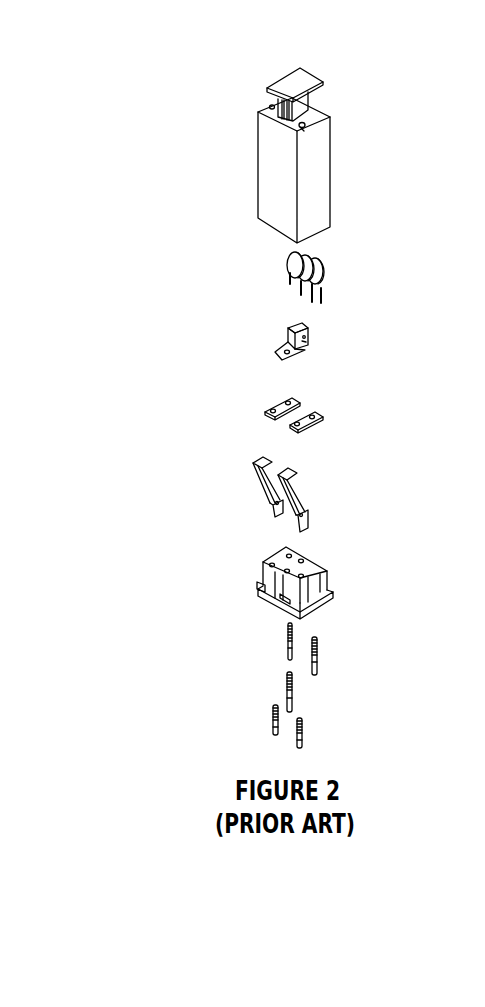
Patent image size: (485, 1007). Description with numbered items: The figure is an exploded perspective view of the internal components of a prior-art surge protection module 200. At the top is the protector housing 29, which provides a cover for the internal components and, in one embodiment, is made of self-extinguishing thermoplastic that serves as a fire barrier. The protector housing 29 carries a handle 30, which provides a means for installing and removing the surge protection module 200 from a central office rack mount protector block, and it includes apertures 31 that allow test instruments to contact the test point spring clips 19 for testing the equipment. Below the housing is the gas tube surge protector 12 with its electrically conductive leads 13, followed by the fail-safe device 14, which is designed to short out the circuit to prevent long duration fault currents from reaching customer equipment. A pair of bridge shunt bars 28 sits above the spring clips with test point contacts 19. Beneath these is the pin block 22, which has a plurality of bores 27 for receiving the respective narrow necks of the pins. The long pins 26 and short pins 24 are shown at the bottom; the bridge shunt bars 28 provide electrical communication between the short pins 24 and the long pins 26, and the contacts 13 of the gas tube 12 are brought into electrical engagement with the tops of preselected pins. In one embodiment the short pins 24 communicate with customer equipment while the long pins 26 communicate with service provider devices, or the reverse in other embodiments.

The surge protection module 200 is at (387, 84).
The handle 30 is at (295, 80).
The apertures 31 is at (268, 105).
The protector housing 29 is at (257, 162).
The gas tube surge protector 12 is at (306, 263).
The electrically conductive leads 13 is at (300, 290).
The fail-safe device 14 is at (304, 331).
The bridge shunt bars 28 is at (282, 403).
The spring clips with test point contacts 19 is at (260, 473).
The bores 27 is at (268, 562).
The pin block 22 is at (320, 563).
The long pins 26 is at (288, 635).
The short pins 24 is at (273, 715).